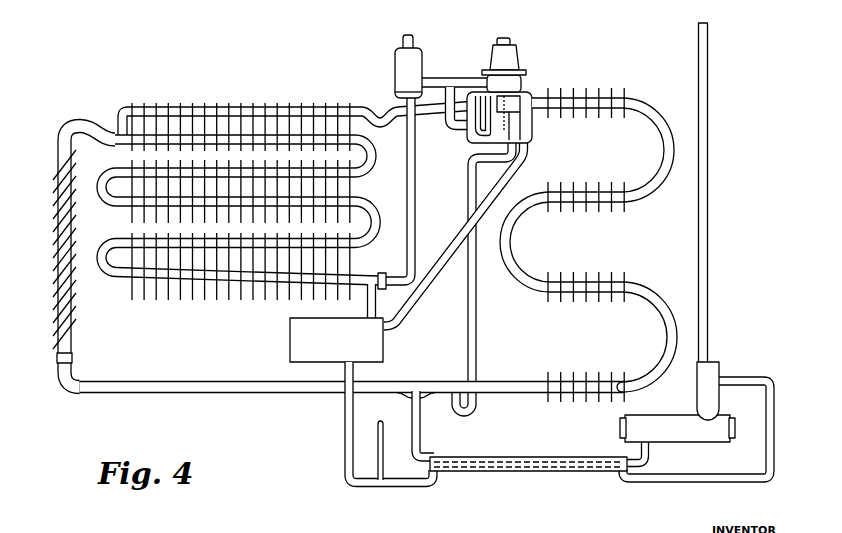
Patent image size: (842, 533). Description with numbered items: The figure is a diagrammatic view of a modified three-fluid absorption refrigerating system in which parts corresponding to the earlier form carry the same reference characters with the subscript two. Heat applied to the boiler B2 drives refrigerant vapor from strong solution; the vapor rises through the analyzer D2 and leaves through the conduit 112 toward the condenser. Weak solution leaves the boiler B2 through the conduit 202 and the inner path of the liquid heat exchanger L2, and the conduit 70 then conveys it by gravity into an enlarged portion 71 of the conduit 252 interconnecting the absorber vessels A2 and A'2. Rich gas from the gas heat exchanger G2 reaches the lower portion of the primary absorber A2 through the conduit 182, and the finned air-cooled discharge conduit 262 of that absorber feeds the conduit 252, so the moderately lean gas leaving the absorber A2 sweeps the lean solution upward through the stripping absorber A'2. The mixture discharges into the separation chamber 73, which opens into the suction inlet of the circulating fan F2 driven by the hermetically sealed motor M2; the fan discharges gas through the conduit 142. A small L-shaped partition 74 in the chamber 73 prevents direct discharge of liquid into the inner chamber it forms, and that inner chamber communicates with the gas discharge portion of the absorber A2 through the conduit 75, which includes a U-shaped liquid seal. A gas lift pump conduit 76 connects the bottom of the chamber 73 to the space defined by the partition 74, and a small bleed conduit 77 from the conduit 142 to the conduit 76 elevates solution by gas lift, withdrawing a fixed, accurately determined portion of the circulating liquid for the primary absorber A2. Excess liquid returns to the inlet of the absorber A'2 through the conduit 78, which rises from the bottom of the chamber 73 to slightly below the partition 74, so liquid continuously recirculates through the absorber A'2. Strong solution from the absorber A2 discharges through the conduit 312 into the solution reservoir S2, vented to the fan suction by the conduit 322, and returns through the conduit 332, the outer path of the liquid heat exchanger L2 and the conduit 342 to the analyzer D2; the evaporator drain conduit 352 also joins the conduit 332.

The finned air-cooled discharge conduit 262 is at (50, 170).
The conduit 75 is at (247, 106).
The absorber A2 is at (177, 301).
The conduit 252 is at (266, 389).
The conduit 182 is at (416, 201).
The conduit 312 is at (364, 307).
The vent conduit 322 is at (433, 288).
The solution reservoir S2 is at (302, 343).
The gas discharge conduit 142 is at (436, 78).
The bleed conduit 77 is at (445, 127).
The gas heat exchanger G2 is at (404, 62).
The circulating fan F2 is at (522, 80).
The gas lift pump conduit 76 is at (478, 138).
The L-shaped partition 74 is at (507, 108).
The separation chamber 73 is at (514, 136).
The electrical motor M2 is at (513, 52).
The absorber A'2 is at (588, 245).
The enlarged portion 71 is at (400, 388).
The conduit 70 is at (420, 422).
The conduit 332 is at (347, 435).
The drain conduit 352 is at (393, 418).
The conduit 342 is at (777, 450).
The conduit 202 is at (650, 455).
The liquid heat exchanger L2 is at (528, 446).
The boiler B2 is at (637, 428).
The analyzer D2 is at (719, 367).
The conduit 112 is at (708, 218).
The conduit 78 is at (474, 199).